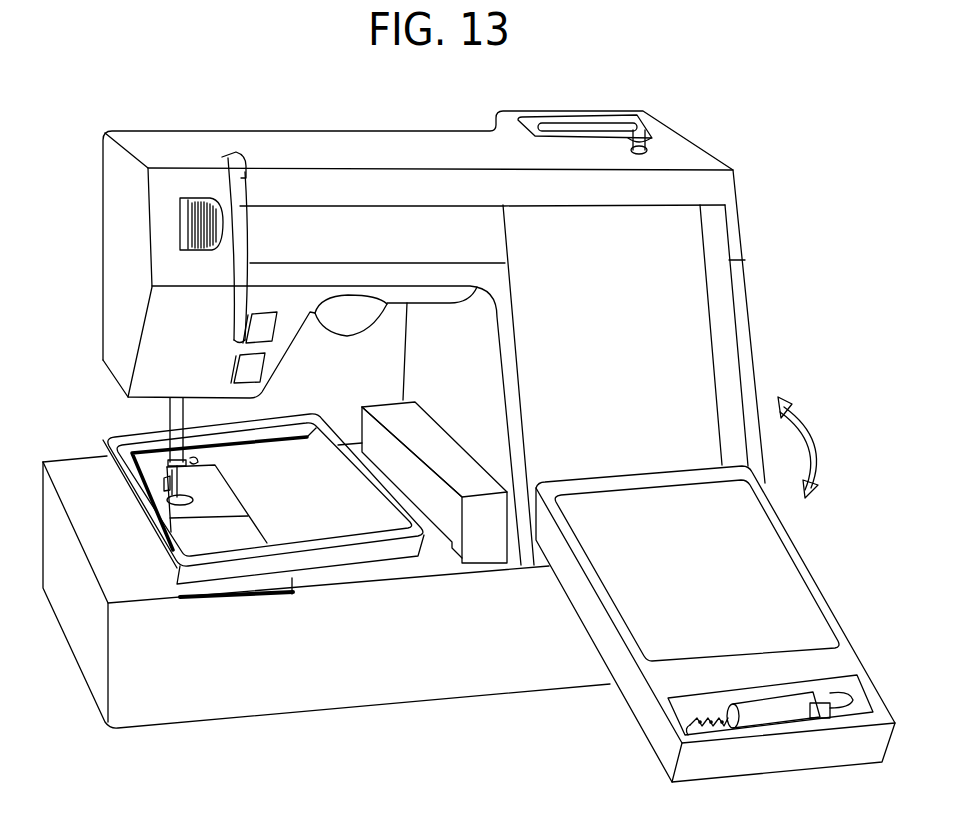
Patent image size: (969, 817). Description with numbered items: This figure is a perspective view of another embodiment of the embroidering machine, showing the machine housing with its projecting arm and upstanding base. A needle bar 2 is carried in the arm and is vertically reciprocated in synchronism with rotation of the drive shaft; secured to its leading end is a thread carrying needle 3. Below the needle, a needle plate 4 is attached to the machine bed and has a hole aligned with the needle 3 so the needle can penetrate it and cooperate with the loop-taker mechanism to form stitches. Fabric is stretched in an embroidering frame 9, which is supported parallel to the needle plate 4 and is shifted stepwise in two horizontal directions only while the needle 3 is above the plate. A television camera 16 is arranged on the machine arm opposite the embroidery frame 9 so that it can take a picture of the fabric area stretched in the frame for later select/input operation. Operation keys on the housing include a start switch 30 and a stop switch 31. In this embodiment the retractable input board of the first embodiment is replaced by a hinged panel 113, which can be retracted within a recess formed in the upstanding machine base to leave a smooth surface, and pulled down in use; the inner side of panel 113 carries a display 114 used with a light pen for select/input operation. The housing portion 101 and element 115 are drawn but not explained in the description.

The needle bar 2 is at (176, 412).
The thread carrying needle 3 is at (182, 490).
The needle plate 4 is at (227, 505).
The embroidering frame 9 is at (328, 428).
The television camera 16 is at (353, 335).
The start switch 30 is at (272, 330).
The stop switch 31 is at (262, 369).
The machine housing 101 is at (748, 279).
The hinged panel 113 is at (828, 606).
The display 114 is at (825, 634).
The storage compartment item 115 is at (773, 712).